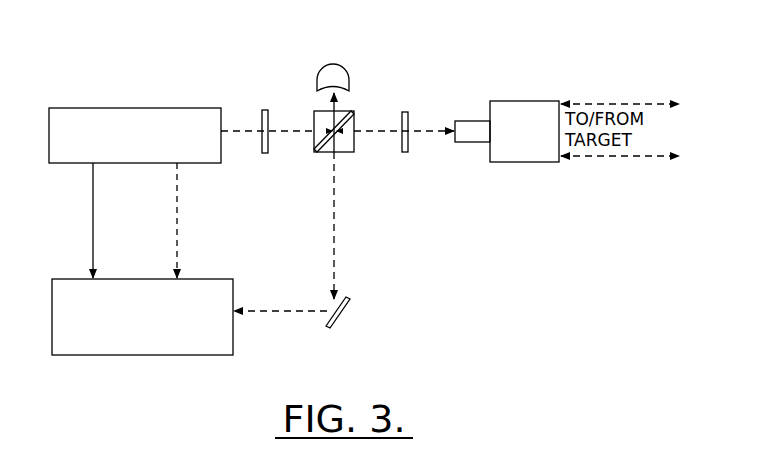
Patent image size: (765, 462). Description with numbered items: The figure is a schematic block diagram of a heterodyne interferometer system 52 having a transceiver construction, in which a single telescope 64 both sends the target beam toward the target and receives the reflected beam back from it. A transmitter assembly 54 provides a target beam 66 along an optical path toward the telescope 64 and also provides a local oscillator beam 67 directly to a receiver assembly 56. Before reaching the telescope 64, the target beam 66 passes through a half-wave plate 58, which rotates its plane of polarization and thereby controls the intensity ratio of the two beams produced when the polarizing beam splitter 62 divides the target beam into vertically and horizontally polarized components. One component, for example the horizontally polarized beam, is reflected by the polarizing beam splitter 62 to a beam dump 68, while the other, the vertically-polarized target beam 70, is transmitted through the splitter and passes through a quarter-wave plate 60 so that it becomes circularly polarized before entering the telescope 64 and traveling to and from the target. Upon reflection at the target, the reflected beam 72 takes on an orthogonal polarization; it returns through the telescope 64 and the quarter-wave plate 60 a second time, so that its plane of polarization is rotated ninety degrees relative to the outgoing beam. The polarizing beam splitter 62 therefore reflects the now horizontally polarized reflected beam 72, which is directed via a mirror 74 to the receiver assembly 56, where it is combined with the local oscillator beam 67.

The heterodyne interferometer system 52 is at (193, 10).
The transmitter assembly 54 is at (135, 120).
The receiver assembly 56 is at (152, 301).
The half-wave plate 58 is at (239, 109).
The quarter-wave plate 60 is at (410, 148).
The polarizing beam splitter 62 is at (361, 162).
The telescope 64 is at (514, 112).
The target beam 66 is at (254, 180).
The local oscillator beam 67 is at (178, 218).
The beam dump 68 is at (352, 77).
The vertically-polarized target beam 70 is at (459, 90).
The reflected beam 72 is at (310, 225).
The mirror 74 is at (352, 313).